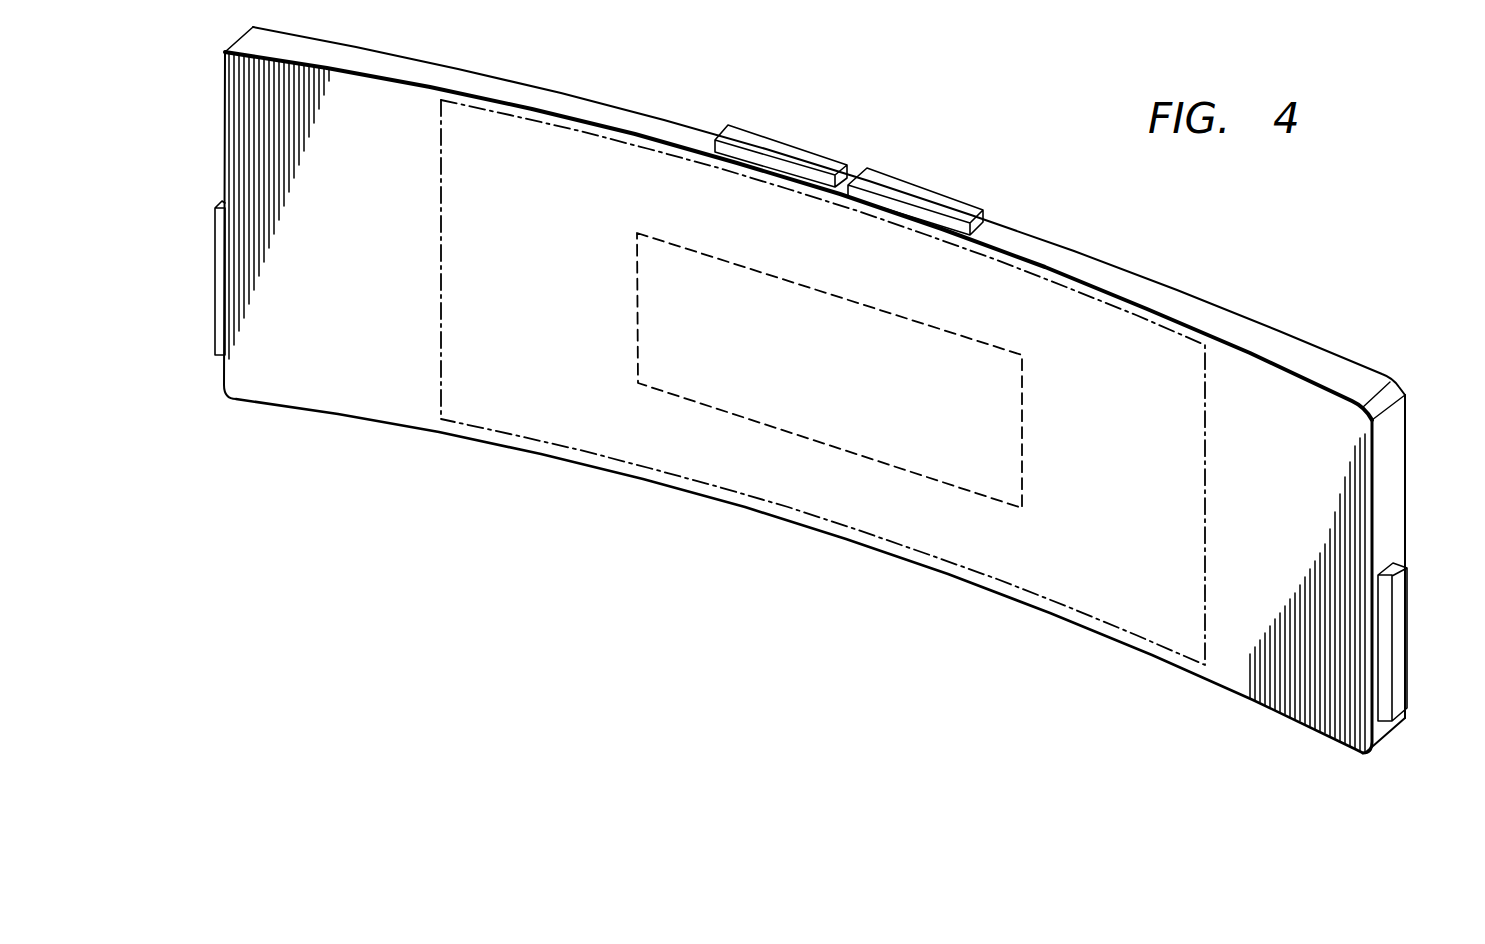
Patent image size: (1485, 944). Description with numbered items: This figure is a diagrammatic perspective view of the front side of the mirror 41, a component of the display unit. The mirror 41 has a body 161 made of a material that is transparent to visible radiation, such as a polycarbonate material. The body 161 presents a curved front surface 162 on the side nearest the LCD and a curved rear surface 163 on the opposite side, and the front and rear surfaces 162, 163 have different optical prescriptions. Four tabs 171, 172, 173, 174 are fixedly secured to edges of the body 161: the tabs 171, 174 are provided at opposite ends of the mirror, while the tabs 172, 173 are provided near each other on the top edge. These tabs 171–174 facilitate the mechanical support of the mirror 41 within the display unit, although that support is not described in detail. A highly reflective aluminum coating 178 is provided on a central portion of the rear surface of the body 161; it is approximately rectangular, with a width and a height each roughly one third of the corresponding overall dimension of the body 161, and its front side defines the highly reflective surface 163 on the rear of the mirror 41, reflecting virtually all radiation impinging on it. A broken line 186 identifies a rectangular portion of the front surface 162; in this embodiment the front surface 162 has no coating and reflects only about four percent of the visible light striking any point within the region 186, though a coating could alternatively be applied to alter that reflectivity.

The mirror 41 is at (1275, 328).
The body 161 is at (1346, 370).
The front surface 162 is at (1153, 625).
The rear surface 163 is at (1405, 512).
The tab 171 is at (215, 279).
The tab 172 is at (792, 148).
The tab 173 is at (918, 192).
The tab 174 is at (1405, 637).
The aluminum coating 178 is at (637, 332).
The broken line 186 is at (443, 340).